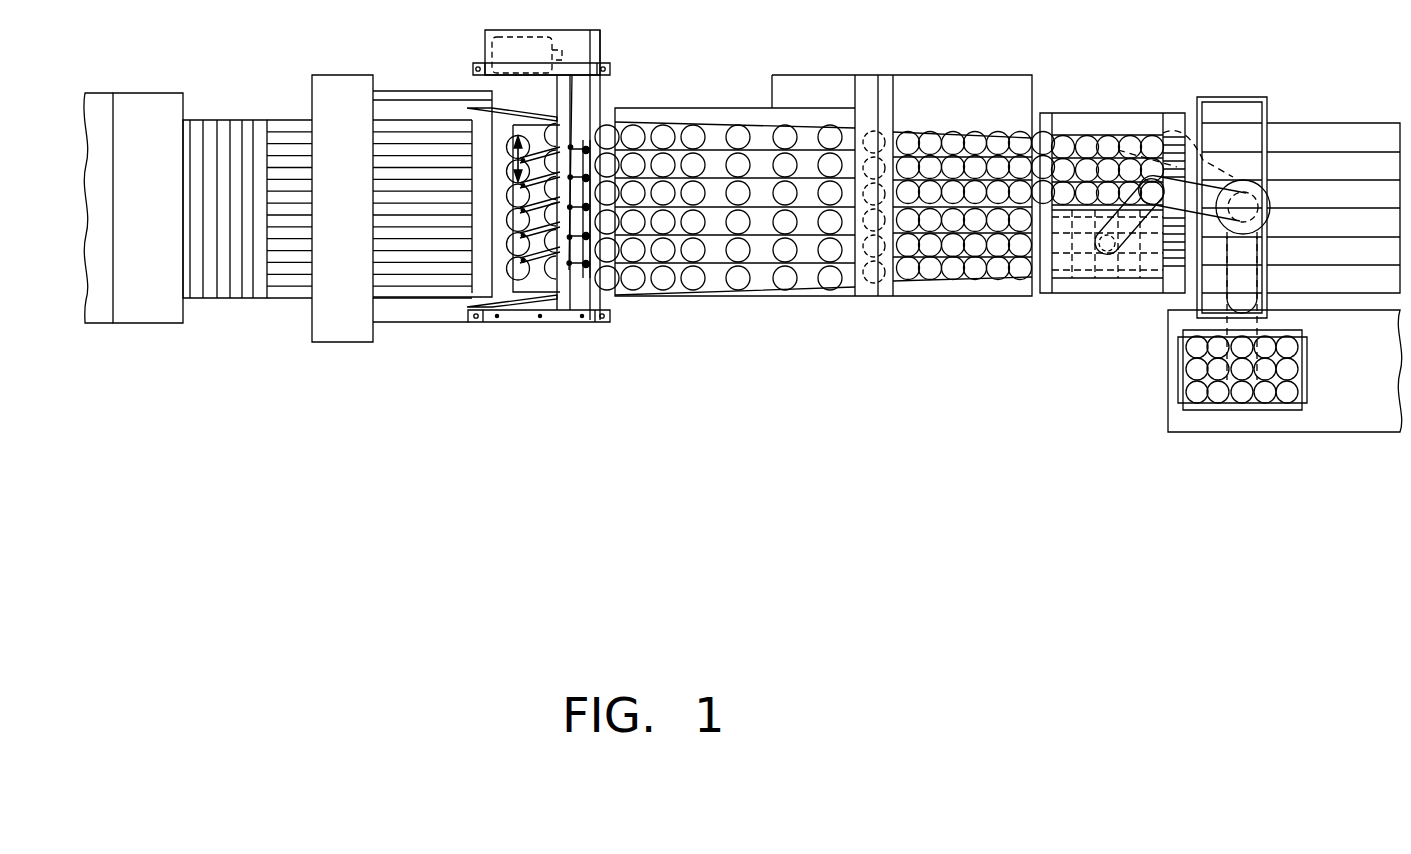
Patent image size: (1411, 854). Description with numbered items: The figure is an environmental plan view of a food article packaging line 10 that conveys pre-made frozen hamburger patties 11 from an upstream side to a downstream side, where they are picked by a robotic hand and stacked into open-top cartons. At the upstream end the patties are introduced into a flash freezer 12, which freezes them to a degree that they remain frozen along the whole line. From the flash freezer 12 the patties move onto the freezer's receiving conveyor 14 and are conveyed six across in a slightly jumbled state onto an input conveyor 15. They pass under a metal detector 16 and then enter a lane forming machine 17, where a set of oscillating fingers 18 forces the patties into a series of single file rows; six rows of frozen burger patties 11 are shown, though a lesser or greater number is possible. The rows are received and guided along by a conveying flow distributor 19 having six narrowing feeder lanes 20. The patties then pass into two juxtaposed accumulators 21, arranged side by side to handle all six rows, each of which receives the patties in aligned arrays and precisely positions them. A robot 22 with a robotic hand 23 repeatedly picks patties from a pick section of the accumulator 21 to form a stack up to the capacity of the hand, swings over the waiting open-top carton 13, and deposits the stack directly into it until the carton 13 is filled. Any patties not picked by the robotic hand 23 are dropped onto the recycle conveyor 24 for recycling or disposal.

The food article packaging line 10 is at (548, 374).
The frozen hamburger patties 11 is at (658, 283).
The flash freezer 12 is at (162, 226).
The open-top carton 13 is at (1273, 405).
The receiving conveyor 14 is at (207, 287).
The input conveyor 15 is at (292, 282).
The metal detector 16 is at (355, 226).
The lane forming machine 17 is at (540, 315).
The oscillating fingers 18 is at (542, 155).
The conveying flow distributor 19 is at (770, 287).
The narrowing feeder lanes 20 is at (718, 150).
The accumulator 21 is at (1092, 121).
The robot 22 is at (1257, 207).
The robotic hand 23 is at (1107, 252).
The recycle conveyor 24 is at (1357, 163).